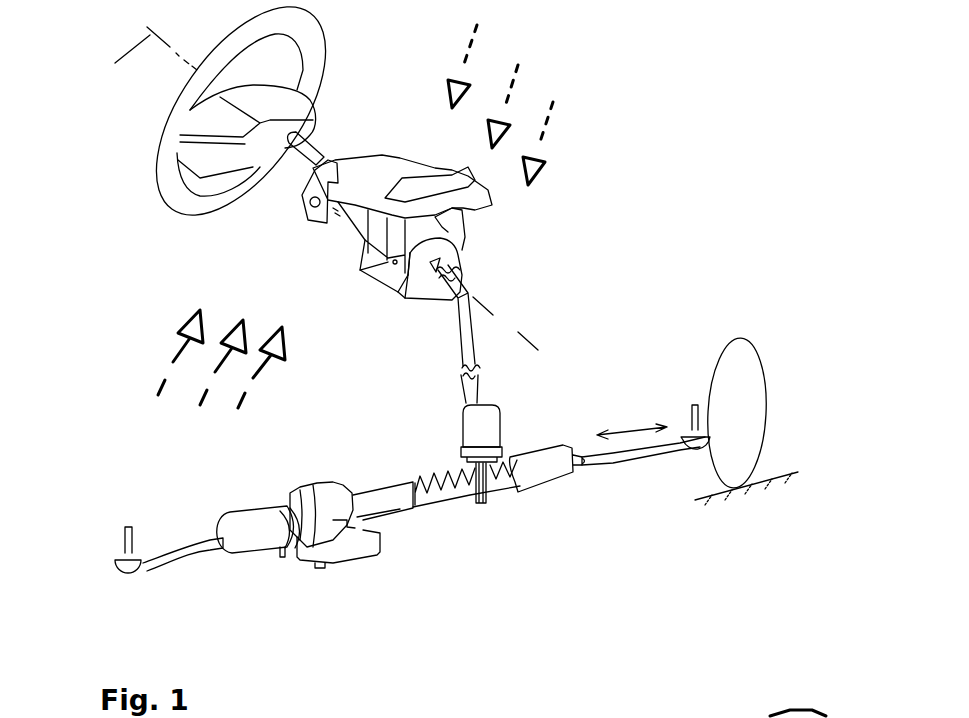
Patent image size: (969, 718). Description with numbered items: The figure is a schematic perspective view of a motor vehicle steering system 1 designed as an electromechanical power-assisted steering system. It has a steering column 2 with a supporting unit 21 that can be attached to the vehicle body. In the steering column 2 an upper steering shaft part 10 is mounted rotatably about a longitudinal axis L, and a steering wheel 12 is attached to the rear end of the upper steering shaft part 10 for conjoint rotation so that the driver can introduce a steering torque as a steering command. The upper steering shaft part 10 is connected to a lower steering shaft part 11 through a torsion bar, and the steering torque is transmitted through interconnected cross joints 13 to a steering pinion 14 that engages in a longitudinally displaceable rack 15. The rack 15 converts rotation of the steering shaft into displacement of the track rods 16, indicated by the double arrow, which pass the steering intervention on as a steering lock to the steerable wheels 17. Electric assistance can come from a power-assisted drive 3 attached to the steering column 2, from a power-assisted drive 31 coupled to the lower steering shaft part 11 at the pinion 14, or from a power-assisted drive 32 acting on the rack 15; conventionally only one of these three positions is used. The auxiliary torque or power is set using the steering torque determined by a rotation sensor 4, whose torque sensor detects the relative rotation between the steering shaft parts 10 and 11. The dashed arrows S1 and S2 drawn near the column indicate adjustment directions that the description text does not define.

The motor vehicle steering system 1 is at (587, 177).
The steering column 2 is at (397, 187).
The power-assisted drive 3 is at (413, 290).
The rotation sensor 4 is at (354, 248).
The upper steering shaft part 10 is at (312, 160).
The lower steering shaft part 11 is at (438, 263).
The steering wheel 12 is at (307, 25).
The cross joints 13 is at (480, 363).
The steering pinion 14 is at (483, 507).
The rack 15 is at (453, 497).
The track rods 16 is at (188, 557).
The steerable wheels 17 is at (743, 373).
The supporting unit 21 is at (387, 167).
The power-assisted drive 31 is at (482, 417).
The power-assisted drive 32 is at (333, 493).
The longitudinal axis L is at (149, 57).
The first adjustment direction S1 is at (550, 110).
The second adjustment direction S2 is at (247, 388).